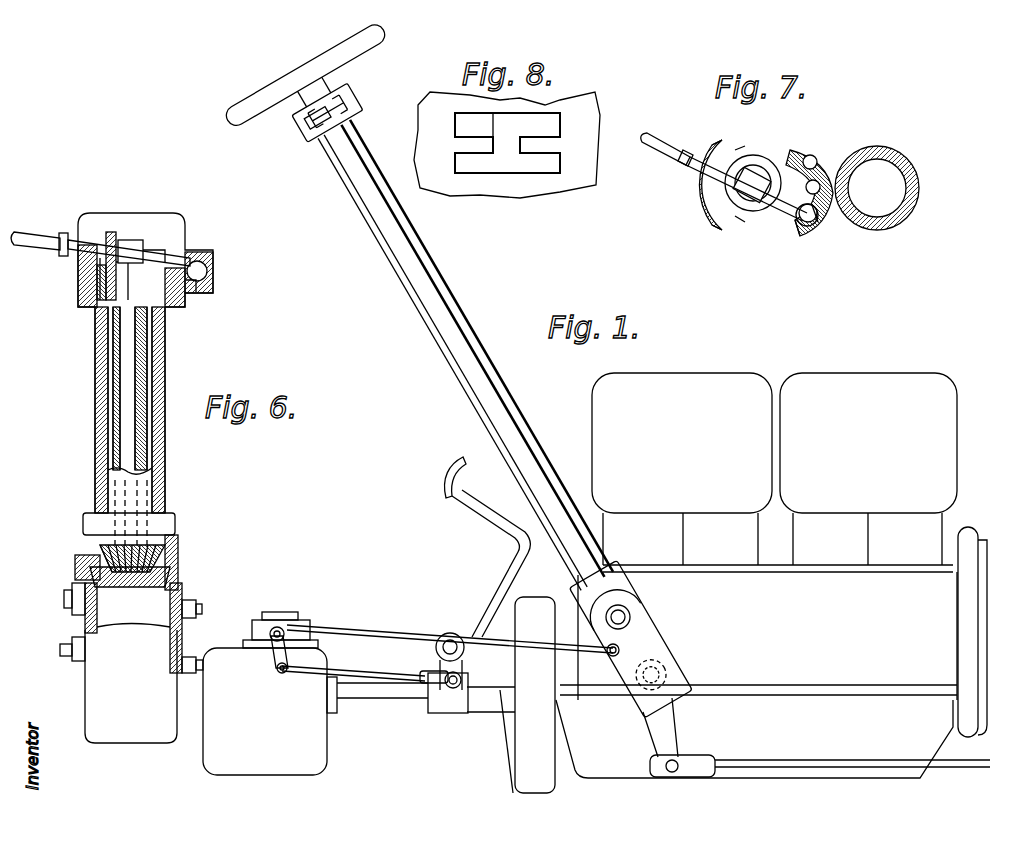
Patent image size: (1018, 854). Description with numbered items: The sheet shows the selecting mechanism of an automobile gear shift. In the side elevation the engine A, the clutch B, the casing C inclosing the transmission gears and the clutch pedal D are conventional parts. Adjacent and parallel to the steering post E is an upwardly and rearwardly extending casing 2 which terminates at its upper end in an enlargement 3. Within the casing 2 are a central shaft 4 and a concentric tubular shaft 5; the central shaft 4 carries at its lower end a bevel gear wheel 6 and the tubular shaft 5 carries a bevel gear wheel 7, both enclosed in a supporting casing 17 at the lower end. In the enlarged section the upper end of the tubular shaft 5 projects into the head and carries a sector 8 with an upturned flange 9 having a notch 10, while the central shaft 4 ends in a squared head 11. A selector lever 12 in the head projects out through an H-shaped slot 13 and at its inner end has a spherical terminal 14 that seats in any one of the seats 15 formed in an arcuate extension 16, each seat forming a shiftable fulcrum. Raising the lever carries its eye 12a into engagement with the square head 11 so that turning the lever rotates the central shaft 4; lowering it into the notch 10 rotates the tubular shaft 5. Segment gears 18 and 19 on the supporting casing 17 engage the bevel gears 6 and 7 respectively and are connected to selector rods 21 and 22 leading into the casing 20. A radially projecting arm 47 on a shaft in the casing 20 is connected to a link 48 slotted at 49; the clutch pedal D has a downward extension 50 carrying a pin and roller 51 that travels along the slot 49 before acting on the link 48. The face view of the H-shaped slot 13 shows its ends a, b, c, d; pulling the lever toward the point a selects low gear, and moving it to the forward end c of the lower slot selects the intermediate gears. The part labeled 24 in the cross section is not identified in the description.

In FIG. 1, the casing 2 is at (347, 160).
In FIG. 6, the casing 2 is at (165, 443).
In FIG. 6, the enlargement 3 is at (170, 252).
In FIG. 7, the enlargement 3 is at (790, 225).
In FIG. 6, the central shaft 4 is at (137, 372).
In FIG. 6, the tubular shaft 5 is at (148, 342).
In FIG. 7, the tubular shaft 5 is at (787, 157).
In FIG. 6, the bevel gear wheel 6 is at (133, 655).
In FIG. 6, the bevel gear wheel 7 is at (167, 550).
In FIG. 6, the sector 8 is at (97, 310).
In FIG. 7, the sector 8 is at (720, 220).
In FIG. 6, the upturned flange 9 is at (80, 270).
In FIG. 7, the upturned flange 9 is at (727, 197).
In FIG. 6, the notch 10 is at (100, 287).
In FIG. 7, the notch 10 is at (735, 188).
In FIG. 6, the squared head 11 is at (132, 238).
In FIG. 1, the selector lever 12 is at (330, 125).
In FIG. 6, the selector lever 12 is at (100, 247).
In FIG. 7, the eye 12a is at (745, 210).
In FIG. 1, the H-shaped slot 13 is at (347, 117).
In FIG. 6, the H-shaped slot 13 is at (82, 273).
In FIG. 7, the H-shaped slot 13 is at (730, 202).
In FIG. 8, the H-shaped slot 13 is at (515, 168).
In FIG. 6, the spherical terminal 14 is at (210, 270).
In FIG. 7, the spherical terminal 14 is at (816, 218).
In FIG. 7, the seats 15 is at (820, 155).
In FIG. 6, the arcuate extension 16 is at (205, 287).
In FIG. 1, the supporting casing 17 is at (653, 633).
In FIG. 6, the supporting casing 17 is at (88, 552).
In FIG. 6, the segment gear 18 is at (180, 578).
In FIG. 1, the segment gear 19 is at (633, 615).
In FIG. 6, the segment gear 19 is at (72, 594).
In FIG. 1, the casing 20 is at (285, 625).
In FIG. 6, the selector rod 21 is at (200, 660).
In FIG. 1, the selector rod 22 is at (400, 634).
In FIG. 6, the selector rod 22 is at (60, 639).
In FIG. 7, the hand lever 24 is at (753, 167).
In FIG. 1, the radially projecting arm 47 is at (320, 637).
In FIG. 1, the link 48 is at (367, 673).
In FIG. 1, the slot 49 is at (427, 684).
In FIG. 1, the downward extension 50 is at (462, 698).
In FIG. 1, the pin and roller 51 is at (453, 688).
In FIG. 1, the engine A is at (771, 575).
In FIG. 1, the clutch B is at (527, 695).
In FIG. 1, the casing C is at (315, 711).
In FIG. 1, the clutch pedal D is at (500, 570).
In FIG. 1, the steering post E is at (457, 297).
In FIG. 7, the steering post E is at (887, 228).
In FIG. 8, the point a is at (467, 120).
In FIG. 8, the gate notch b is at (547, 120).
In FIG. 8, the end of lower slot c is at (560, 158).
In FIG. 8, the gate notch d is at (463, 157).